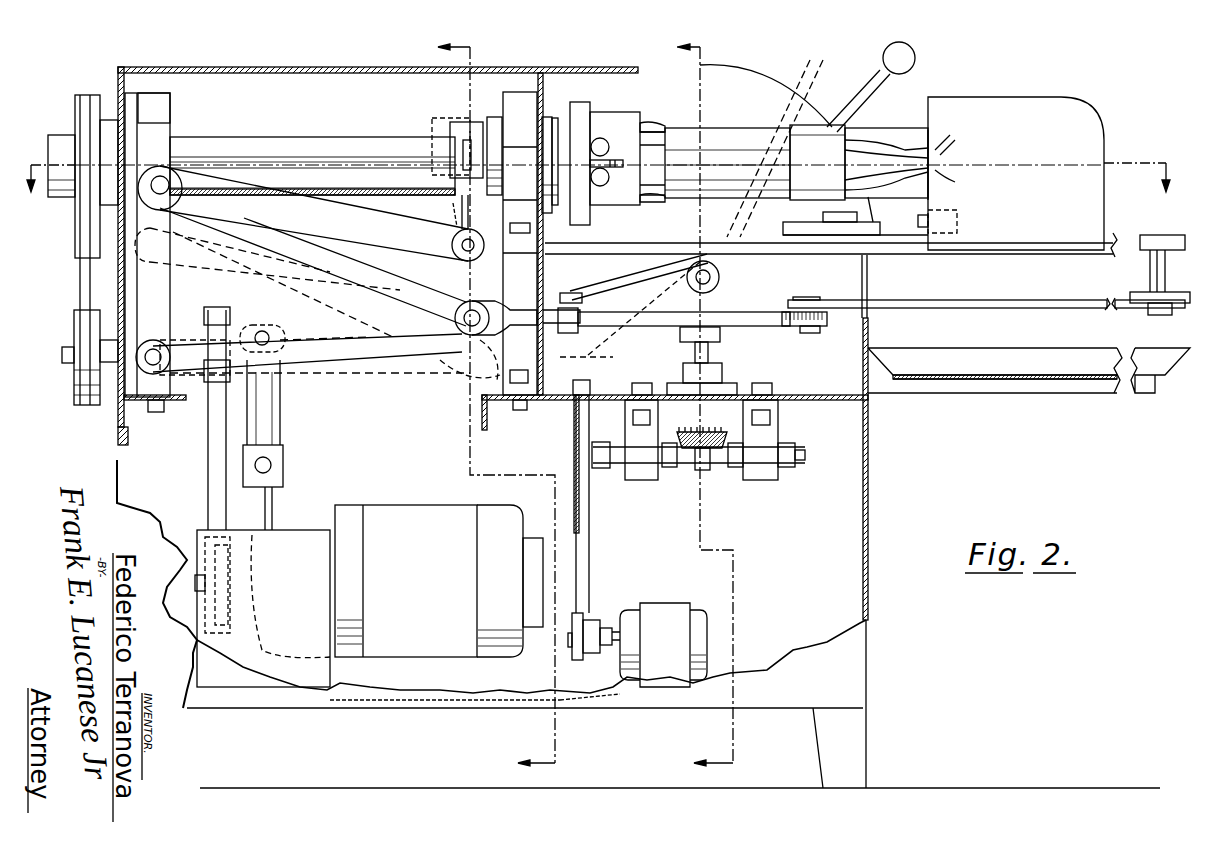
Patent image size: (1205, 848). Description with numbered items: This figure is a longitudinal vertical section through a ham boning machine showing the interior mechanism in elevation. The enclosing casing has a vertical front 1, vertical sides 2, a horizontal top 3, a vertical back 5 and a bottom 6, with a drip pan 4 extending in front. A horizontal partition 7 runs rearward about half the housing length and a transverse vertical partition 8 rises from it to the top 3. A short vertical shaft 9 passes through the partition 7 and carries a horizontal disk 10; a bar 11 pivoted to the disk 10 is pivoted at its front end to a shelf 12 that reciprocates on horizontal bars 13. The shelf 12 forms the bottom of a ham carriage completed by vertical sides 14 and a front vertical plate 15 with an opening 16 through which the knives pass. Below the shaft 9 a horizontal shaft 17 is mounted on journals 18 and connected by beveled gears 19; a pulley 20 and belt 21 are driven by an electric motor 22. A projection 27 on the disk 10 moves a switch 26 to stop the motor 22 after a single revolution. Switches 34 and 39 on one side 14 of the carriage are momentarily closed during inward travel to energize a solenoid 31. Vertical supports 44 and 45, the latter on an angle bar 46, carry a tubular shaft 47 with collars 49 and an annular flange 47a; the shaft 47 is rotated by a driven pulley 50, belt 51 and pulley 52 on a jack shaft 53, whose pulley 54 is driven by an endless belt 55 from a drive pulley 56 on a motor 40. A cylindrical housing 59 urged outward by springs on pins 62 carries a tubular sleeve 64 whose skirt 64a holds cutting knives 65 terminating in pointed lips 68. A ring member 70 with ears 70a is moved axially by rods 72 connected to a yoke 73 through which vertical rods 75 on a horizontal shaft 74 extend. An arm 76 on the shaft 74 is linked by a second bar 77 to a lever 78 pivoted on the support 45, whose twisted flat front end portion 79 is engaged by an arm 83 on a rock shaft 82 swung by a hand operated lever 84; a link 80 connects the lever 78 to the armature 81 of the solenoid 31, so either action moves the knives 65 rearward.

The vertical front 1 is at (38, 137).
The vertical sides 2 is at (745, 88).
The horizontal top 3 is at (290, 70).
The drip pan 4 is at (1005, 370).
The vertical back 5 is at (112, 248).
The bottom 6 is at (540, 695).
The horizontal partition 7 is at (595, 396).
The transverse vertical partition 8 is at (535, 305).
The vertical shaft 9 is at (710, 354).
The horizontal disk 10 is at (705, 320).
The bar 11 is at (963, 308).
The shelf 12 is at (1113, 257).
The horizontal bars 13 is at (806, 250).
The vertical sides 14 is at (1020, 122).
The front vertical plate 15 is at (932, 135).
The opening 16 is at (945, 178).
The horizontal shaft 17 is at (718, 468).
The journals 18 is at (778, 442).
The beveled gears 19 is at (697, 470).
The pulley 20 is at (592, 535).
The belt 21 is at (590, 582).
The electric motor 22 is at (648, 608).
The switch 26 is at (566, 293).
The projection 27 is at (583, 335).
The solenoid 31 is at (302, 530).
The normally open switch 34 is at (918, 218).
The second switch 39 is at (823, 216).
The motor 40 is at (368, 510).
The front vertical support 44 is at (505, 305).
The rear vertical support 45 is at (163, 287).
The transverse angle bar 46 is at (160, 412).
The tubular shaft 47 is at (283, 137).
The annular flange 47a is at (552, 212).
The collars 49 is at (493, 117).
The driven pulley 50 is at (75, 200).
The belt 51 is at (84, 262).
The pulley 52 is at (74, 378).
The jack shaft 53 is at (140, 372).
The pulley 54 is at (250, 397).
The endless belt 55 is at (210, 440).
The drive pulley 56 is at (248, 610).
The cylindrical housing 59 is at (640, 170).
The pins 62 is at (660, 128).
The tubular sleeve 64 is at (742, 130).
The annular skirt 64a is at (727, 157).
The cutting knives 65 is at (845, 147).
The pointed lip 68 is at (935, 150).
The ring member 70 is at (585, 118).
The ears 70a is at (597, 142).
The rods 72 is at (355, 157).
The yoke 73 is at (462, 122).
The horizontal shaft 74 is at (452, 245).
The vertical rods 75 is at (460, 207).
The arm 76 is at (410, 247).
The second bar 77 is at (363, 283).
The lever 78 is at (345, 352).
The flat front end portion 79 is at (600, 292).
The link 80 is at (282, 437).
The armature 81 is at (270, 502).
The rock shaft 82 is at (719, 277).
The arm 83 is at (650, 290).
The hand operated lever 84 is at (777, 92).